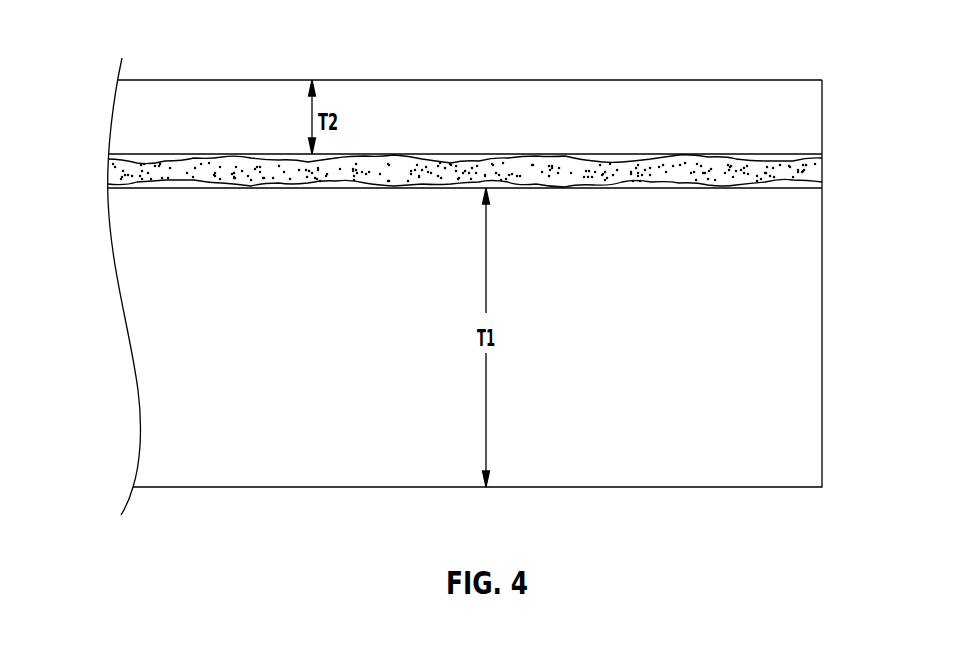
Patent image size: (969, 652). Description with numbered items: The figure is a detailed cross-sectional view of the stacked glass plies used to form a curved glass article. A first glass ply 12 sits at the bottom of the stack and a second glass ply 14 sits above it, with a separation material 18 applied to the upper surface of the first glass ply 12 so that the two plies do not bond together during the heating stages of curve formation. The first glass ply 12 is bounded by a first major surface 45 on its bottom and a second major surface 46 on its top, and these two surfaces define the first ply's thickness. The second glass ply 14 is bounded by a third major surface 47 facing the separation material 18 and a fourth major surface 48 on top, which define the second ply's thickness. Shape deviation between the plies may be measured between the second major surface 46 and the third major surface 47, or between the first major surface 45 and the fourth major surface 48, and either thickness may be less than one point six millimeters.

The first glass ply 12 is at (802, 443).
The second glass ply 14 is at (800, 120).
The separation material 18 is at (805, 172).
The first major surface 45 is at (668, 487).
The second major surface 46 is at (126, 185).
The third major surface 47 is at (777, 157).
The fourth major surface 48 is at (667, 79).